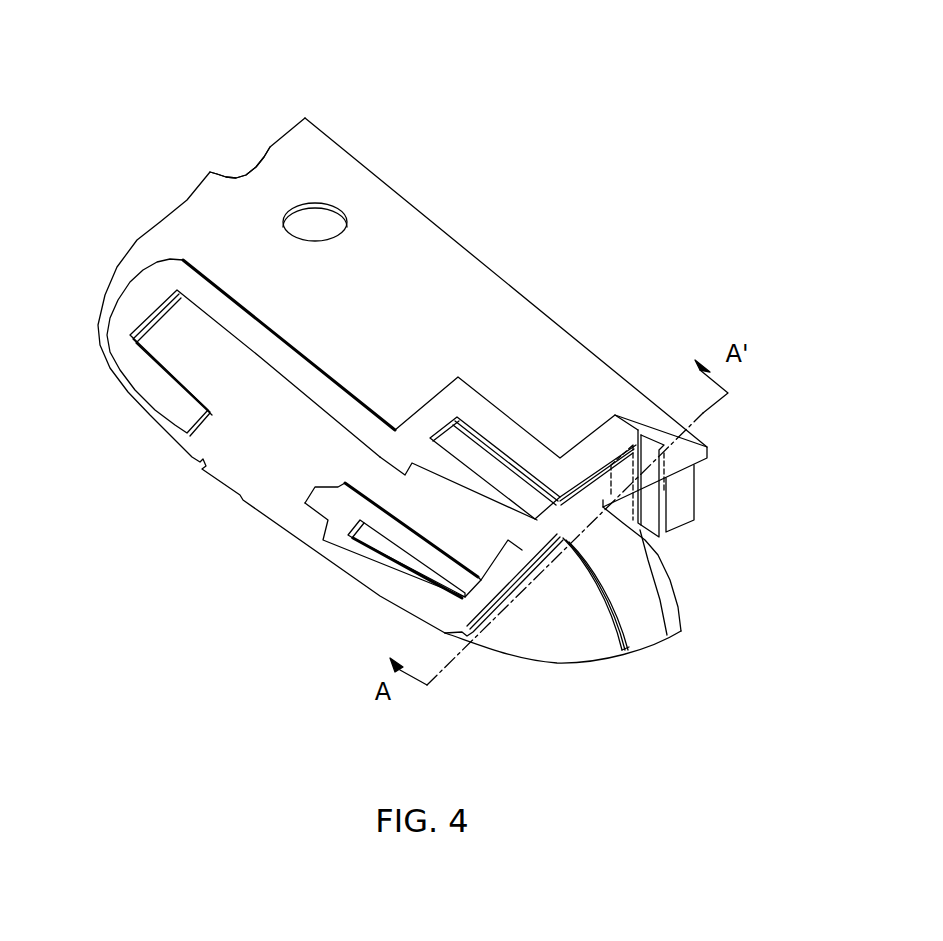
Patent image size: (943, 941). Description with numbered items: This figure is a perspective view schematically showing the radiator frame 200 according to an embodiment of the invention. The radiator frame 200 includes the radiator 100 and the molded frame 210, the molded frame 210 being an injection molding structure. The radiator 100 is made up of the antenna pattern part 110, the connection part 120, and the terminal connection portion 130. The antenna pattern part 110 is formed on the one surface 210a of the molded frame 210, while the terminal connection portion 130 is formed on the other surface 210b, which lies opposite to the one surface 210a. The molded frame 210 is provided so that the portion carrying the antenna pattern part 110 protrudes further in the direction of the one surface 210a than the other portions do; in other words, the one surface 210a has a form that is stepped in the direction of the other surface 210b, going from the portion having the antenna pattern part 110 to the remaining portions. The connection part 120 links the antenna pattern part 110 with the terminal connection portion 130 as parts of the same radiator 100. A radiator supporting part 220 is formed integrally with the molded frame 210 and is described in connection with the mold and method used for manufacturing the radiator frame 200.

The radiator frame 200 is at (540, 50).
The molded frame 210 is at (187, 200).
The one surface 210a is at (283, 152).
The other surface 210b is at (703, 462).
The antenna pattern part 110 is at (343, 415).
The radiator supporting part 220 is at (685, 497).
The terminal connection portion 130 is at (667, 530).
The connection part 120 is at (655, 520).
The radiator 100 is at (530, 587).